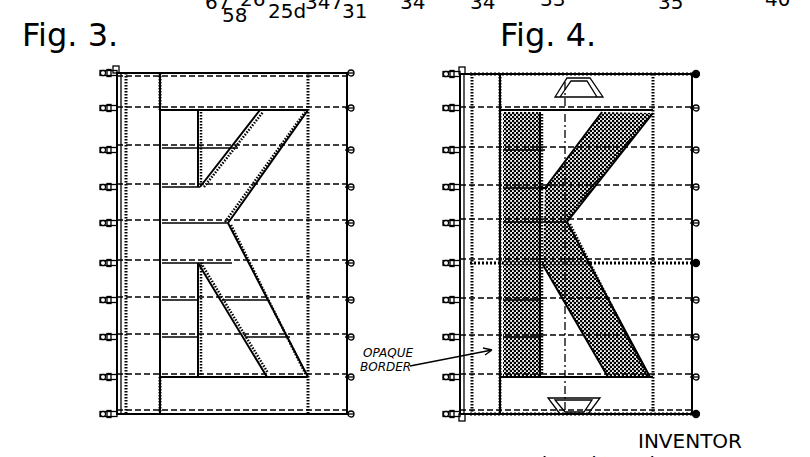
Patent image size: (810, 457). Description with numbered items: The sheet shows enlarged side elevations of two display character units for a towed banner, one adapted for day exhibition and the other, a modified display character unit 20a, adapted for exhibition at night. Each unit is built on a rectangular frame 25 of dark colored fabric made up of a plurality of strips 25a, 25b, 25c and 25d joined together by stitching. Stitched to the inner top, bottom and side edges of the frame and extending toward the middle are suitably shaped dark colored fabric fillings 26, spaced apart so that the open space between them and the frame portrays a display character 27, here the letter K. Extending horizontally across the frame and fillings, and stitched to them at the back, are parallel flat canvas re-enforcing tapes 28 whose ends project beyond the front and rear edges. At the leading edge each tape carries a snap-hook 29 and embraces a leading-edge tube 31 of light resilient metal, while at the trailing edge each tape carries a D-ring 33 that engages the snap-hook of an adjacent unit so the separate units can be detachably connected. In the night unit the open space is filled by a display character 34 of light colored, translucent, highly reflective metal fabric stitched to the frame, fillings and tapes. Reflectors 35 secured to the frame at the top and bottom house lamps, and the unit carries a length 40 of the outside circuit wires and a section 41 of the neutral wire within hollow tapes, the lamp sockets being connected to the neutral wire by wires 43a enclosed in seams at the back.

In FIG. 4, the display character unit 20a is at (598, 57).
In FIG. 3, the rectangular frame 25 is at (188, 94).
In FIG. 4, the rectangular frame 25 is at (672, 96).
In FIG. 3, the frame strip 25a is at (146, 243).
In FIG. 4, the frame strip 25a is at (482, 166).
In FIG. 3, the frame strip 25b is at (331, 243).
In FIG. 4, the frame strip 25b is at (672, 174).
In FIG. 3, the frame strip 25c is at (234, 91).
In FIG. 4, the frame strip 25c is at (576, 92).
In FIG. 3, the frame strip 25d is at (234, 395).
In FIG. 4, the frame strip 25d is at (576, 395).
In FIG. 3, the dark colored fabric fillings 26 is at (253, 243).
In FIG. 4, the dark colored fabric fillings 26 is at (598, 160).
In FIG. 3, the display character 27 is at (283, 362).
In FIG. 3, the re-enforcing tapes 28 is at (102, 108).
In FIG. 4, the re-enforcing tapes 28 is at (448, 118).
In FIG. 3, the snap-hook 29 is at (102, 188).
In FIG. 4, the snap-hook 29 is at (446, 224).
In FIG. 3, the leading-edge tube 31 is at (120, 70).
In FIG. 4, the leading-edge tube 31 is at (462, 70).
In FIG. 3, the D-ring 33 is at (353, 73).
In FIG. 4, the D-ring 33 is at (698, 150).
In FIG. 4, the display character 34 is at (514, 286).
In FIG. 4, the reflectors 35 is at (580, 82).
In FIG. 4, the outside circuit wires 40 is at (700, 74).
In FIG. 4, the neutral wire 41 is at (697, 264).
In FIG. 4, the wires 43a is at (563, 122).